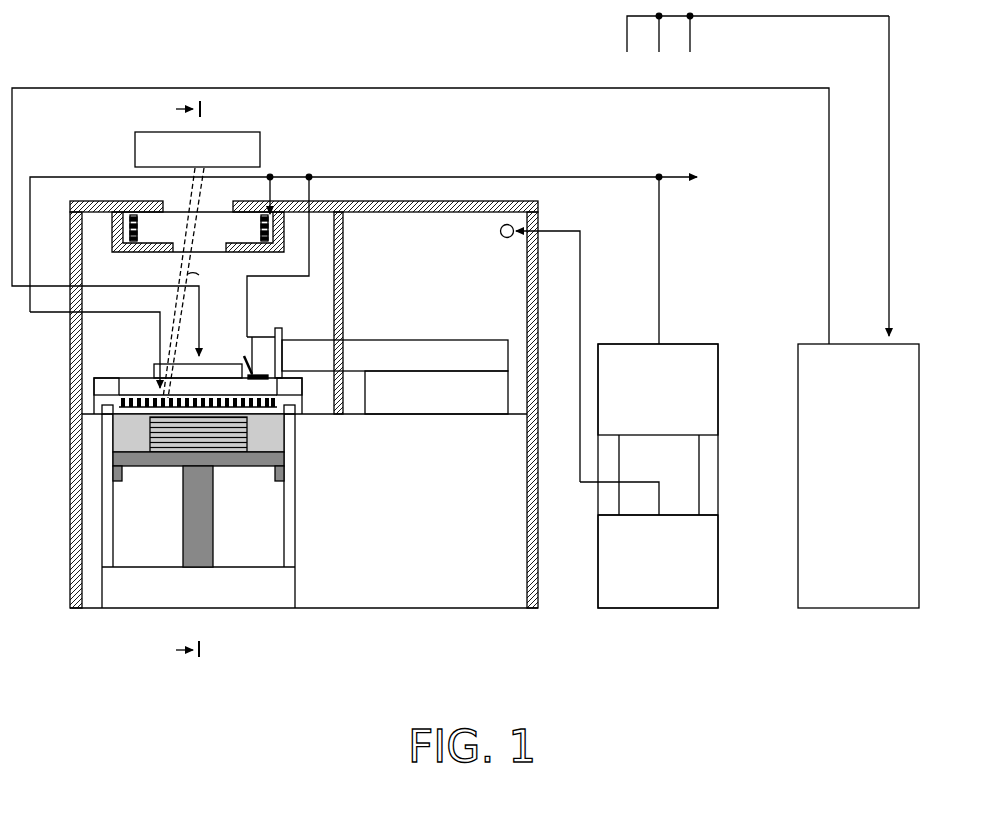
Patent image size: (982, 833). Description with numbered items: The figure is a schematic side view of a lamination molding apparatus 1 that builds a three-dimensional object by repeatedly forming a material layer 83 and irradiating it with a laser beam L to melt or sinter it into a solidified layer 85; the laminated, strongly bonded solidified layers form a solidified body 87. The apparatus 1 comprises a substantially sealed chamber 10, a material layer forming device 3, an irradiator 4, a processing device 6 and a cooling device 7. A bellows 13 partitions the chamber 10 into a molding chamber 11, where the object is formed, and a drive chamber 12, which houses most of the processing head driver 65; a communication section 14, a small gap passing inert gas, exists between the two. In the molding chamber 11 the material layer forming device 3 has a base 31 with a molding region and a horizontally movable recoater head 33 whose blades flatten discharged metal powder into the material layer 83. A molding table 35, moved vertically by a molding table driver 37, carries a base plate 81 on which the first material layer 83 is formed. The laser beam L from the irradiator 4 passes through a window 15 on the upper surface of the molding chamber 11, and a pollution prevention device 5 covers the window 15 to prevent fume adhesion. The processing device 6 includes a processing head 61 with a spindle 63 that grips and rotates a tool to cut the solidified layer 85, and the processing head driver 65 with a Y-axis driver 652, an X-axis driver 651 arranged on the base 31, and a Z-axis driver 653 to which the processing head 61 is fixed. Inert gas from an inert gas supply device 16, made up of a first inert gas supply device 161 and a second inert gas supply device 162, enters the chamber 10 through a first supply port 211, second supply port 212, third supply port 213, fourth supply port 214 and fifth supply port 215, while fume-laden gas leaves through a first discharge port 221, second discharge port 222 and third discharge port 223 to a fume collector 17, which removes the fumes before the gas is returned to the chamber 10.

The lamination molding apparatus 1 is at (76, 59).
The material layer forming device 3 is at (124, 349).
The irradiator 4 is at (240, 136).
The pollution prevention device 5 is at (123, 250).
The processing device 6 is at (389, 303).
The cooling device 7 is at (247, 361).
The chamber 10 is at (292, 396).
The molding chamber 11 is at (277, 299).
The drive chamber 12 is at (403, 268).
The bellows 13 is at (345, 281).
The communication section 14 is at (350, 219).
The window 15 is at (209, 210).
The inert gas supply device 16 is at (699, 315).
The fume collector 17 is at (910, 348).
The base 31 is at (311, 418).
The recoater head 33 is at (115, 378).
The molding table 35 is at (136, 462).
The molding table driver 37 is at (207, 490).
The processing head 61 is at (255, 341).
The spindle 63 is at (268, 379).
The processing head driver 65 is at (402, 331).
The base plate 81 is at (227, 455).
The material layer 83 is at (243, 440).
The solidified layer 85 is at (158, 445).
The solidified body 87 is at (256, 432).
The first inert gas supply device 161 is at (628, 355).
The second inert gas supply device 162 is at (605, 532).
The first supply port 211 is at (150, 397).
The second supply port 212 is at (382, 279).
The third supply port 213 is at (154, 364).
The fourth supply port 214 is at (498, 236).
The fifth supply port 215 is at (269, 199).
The first discharge port 221 is at (637, 43).
The second discharge port 222 is at (668, 42).
The third discharge port 223 is at (783, 42).
The X-axis driver 651 is at (500, 385).
The Y-axis driver 652 is at (420, 346).
The Z-axis driver 653 is at (283, 330).